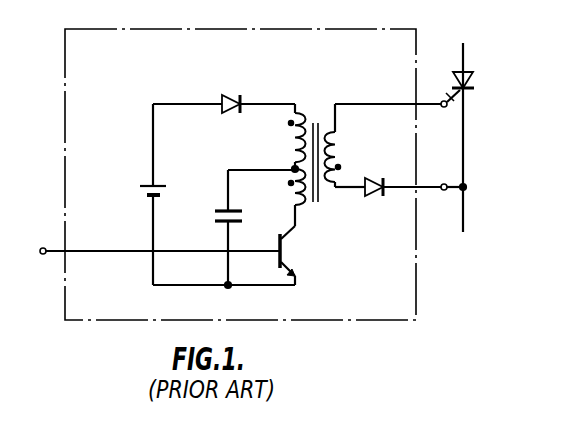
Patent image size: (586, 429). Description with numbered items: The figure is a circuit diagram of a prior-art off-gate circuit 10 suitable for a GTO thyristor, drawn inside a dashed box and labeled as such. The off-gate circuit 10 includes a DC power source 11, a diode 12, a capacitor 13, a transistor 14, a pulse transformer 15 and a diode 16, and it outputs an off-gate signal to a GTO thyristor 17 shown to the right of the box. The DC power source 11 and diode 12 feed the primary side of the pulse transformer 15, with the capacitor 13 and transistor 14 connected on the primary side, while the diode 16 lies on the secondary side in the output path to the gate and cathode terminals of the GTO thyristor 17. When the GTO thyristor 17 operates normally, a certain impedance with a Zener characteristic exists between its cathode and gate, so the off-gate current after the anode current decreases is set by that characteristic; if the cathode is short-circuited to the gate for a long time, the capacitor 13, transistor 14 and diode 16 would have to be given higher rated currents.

The off-gate circuit 10 is at (259, 23).
The DC power source 11 is at (141, 189).
The diode 12 is at (231, 112).
The capacitor 13 is at (212, 213).
The transistor 14 is at (296, 243).
The pulse transformer 15 is at (317, 119).
The diode 16 is at (368, 178).
The GTO thyristor 17 is at (475, 79).